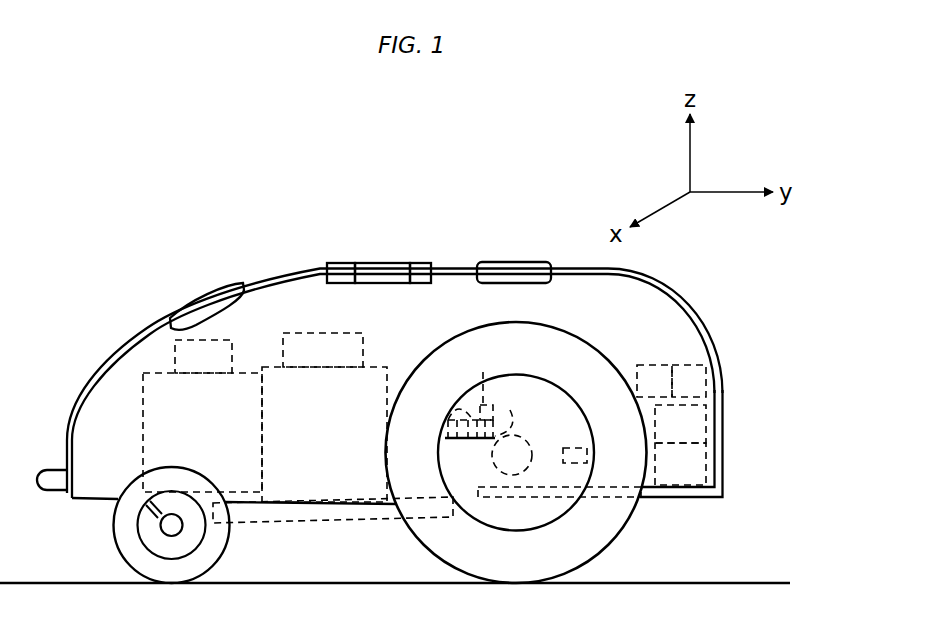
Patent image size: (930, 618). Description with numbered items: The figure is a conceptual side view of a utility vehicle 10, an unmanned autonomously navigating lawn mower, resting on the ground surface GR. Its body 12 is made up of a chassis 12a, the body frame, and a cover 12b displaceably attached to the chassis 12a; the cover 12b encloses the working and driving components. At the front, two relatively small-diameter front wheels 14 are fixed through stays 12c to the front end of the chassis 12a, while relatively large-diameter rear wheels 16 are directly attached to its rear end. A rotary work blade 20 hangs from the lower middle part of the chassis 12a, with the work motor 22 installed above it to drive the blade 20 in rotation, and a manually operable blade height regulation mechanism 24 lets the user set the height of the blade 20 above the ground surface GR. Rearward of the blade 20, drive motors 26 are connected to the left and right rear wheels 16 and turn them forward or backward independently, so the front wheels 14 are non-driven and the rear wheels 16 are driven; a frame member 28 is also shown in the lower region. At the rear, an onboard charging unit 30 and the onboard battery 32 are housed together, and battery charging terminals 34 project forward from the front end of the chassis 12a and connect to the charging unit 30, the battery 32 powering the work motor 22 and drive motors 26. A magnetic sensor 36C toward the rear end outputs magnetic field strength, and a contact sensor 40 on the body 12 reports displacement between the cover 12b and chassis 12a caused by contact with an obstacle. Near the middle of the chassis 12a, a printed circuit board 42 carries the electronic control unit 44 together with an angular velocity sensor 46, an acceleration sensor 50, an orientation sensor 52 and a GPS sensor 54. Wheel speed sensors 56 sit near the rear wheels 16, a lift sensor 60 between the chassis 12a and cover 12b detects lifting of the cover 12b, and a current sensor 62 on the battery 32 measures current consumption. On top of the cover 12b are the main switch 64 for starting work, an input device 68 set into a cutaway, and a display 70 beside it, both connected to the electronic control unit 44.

The utility vehicle 10 is at (669, 274).
The body 12 is at (829, 428).
The chassis 12a is at (723, 478).
The cover 12b is at (719, 378).
The stays 12c is at (148, 523).
The front wheels 14 is at (118, 553).
The rear wheels 16 is at (410, 533).
The work blade 20 is at (313, 523).
The work motor 22 is at (324, 434).
The blade height regulation mechanism 24 is at (323, 350).
The drive motors 26 is at (524, 433).
The base frame 28 is at (559, 492).
The onboard charging unit 30 is at (680, 424).
The onboard battery 32 is at (680, 464).
The battery charging terminals 34 is at (60, 470).
The magnetic sensor 36C is at (520, 262).
The contact sensor 40 is at (202, 416).
The printed circuit board 42 is at (470, 440).
The electronic control unit 44 is at (445, 413).
The angular velocity sensor 46 is at (458, 403).
The acceleration sensor 50 is at (489, 378).
The orientation sensor 52 is at (493, 403).
The GPS sensor 54 is at (518, 417).
The wheel speed sensors 56 is at (586, 447).
The lift sensor 60 is at (689, 381).
The current sensor 62 is at (654, 381).
The main switch 64 is at (341, 270).
The input device 68 is at (418, 262).
The display 70 is at (387, 258).
The ground surface GR is at (656, 583).